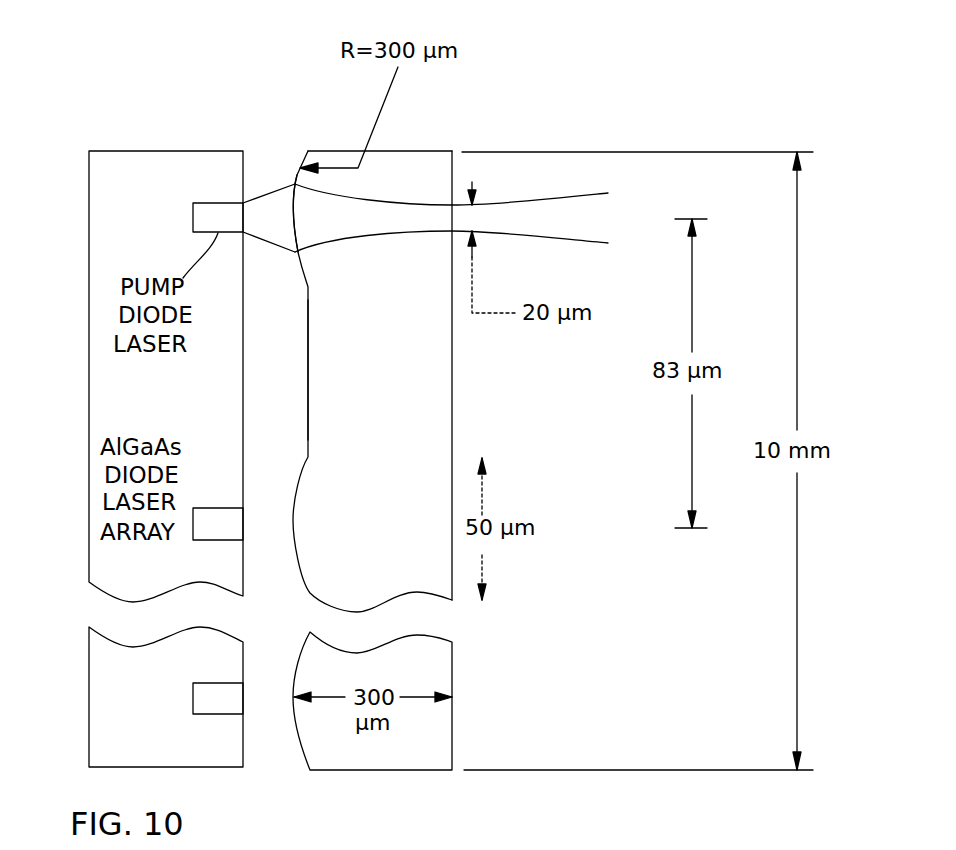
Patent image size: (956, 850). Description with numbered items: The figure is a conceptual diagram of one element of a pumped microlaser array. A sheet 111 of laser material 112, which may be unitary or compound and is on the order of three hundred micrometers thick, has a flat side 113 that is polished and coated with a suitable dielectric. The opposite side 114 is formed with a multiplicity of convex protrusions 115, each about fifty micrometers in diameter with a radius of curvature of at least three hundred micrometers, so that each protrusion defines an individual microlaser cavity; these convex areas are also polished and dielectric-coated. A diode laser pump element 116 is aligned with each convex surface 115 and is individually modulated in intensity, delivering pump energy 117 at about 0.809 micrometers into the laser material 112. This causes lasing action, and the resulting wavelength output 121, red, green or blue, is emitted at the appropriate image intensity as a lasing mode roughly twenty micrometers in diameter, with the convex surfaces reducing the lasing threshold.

The sheet 111 is at (412, 128).
The laser material 112 is at (435, 342).
The flat side 113 is at (453, 413).
The opposite side 114 is at (308, 377).
The convex protrusion 115 is at (293, 213).
The diode laser pump element 116 is at (193, 220).
The pump energy 117 is at (257, 193).
The wavelength output 121 is at (575, 194).